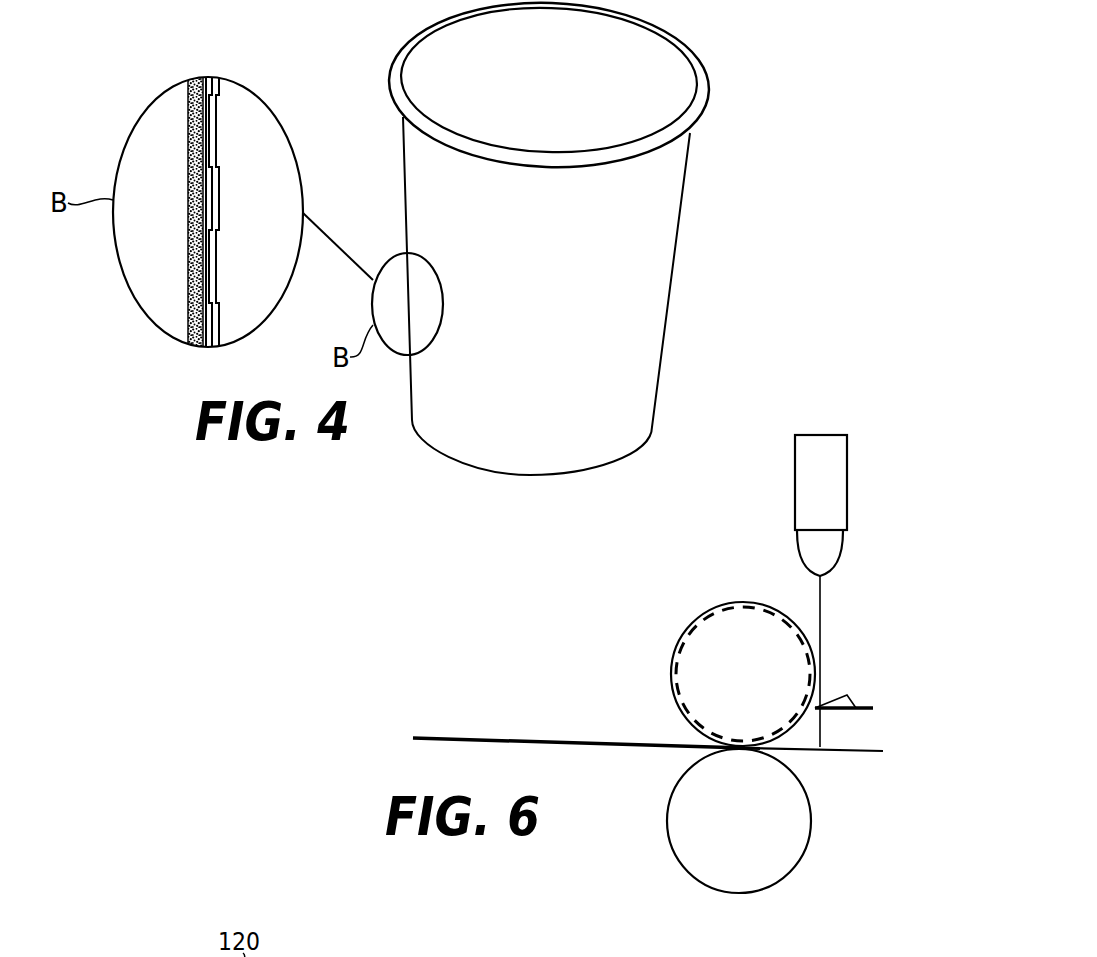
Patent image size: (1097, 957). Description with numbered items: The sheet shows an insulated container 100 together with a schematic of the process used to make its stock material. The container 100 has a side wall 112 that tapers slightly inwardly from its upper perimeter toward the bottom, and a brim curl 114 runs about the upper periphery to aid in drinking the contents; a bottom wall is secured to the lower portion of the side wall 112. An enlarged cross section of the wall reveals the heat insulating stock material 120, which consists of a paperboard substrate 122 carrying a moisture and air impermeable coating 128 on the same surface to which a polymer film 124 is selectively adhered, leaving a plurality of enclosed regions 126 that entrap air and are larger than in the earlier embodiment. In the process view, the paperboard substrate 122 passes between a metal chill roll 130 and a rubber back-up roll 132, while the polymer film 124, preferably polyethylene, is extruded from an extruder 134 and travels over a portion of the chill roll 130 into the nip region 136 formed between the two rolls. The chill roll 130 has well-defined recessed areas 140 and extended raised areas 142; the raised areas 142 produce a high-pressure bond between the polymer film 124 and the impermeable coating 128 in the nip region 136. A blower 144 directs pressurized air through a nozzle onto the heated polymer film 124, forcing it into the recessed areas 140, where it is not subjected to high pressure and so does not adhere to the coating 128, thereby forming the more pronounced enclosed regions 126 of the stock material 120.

In FIG. 4, the container 100 is at (591, 237).
In FIG. 4, the side wall 112 is at (645, 340).
In FIG. 4, the brim curl 114 is at (693, 115).
In FIG. 6, the heat insulating stock material 120 is at (509, 737).
In FIG. 4, the paperboard substrate 122 is at (212, 215).
In FIG. 6, the paperboard substrate 122 is at (865, 755).
In FIG. 4, the polymer film 124 is at (219, 192).
In FIG. 6, the polymer film 124 is at (822, 613).
In FIG. 4, the enclosed regions 126 is at (207, 266).
In FIG. 4, the impermeable coating 128 is at (193, 183).
In FIG. 6, the metal chill roll 130 is at (718, 645).
In FIG. 6, the rubber back-up roll 132 is at (692, 842).
In FIG. 6, the extruder 134 is at (832, 483).
In FIG. 6, the nip region 136 is at (740, 752).
In FIG. 6, the recessed areas 140 is at (743, 642).
In FIG. 6, the raised areas 142 is at (752, 599).
In FIG. 6, the blower 144 is at (840, 692).